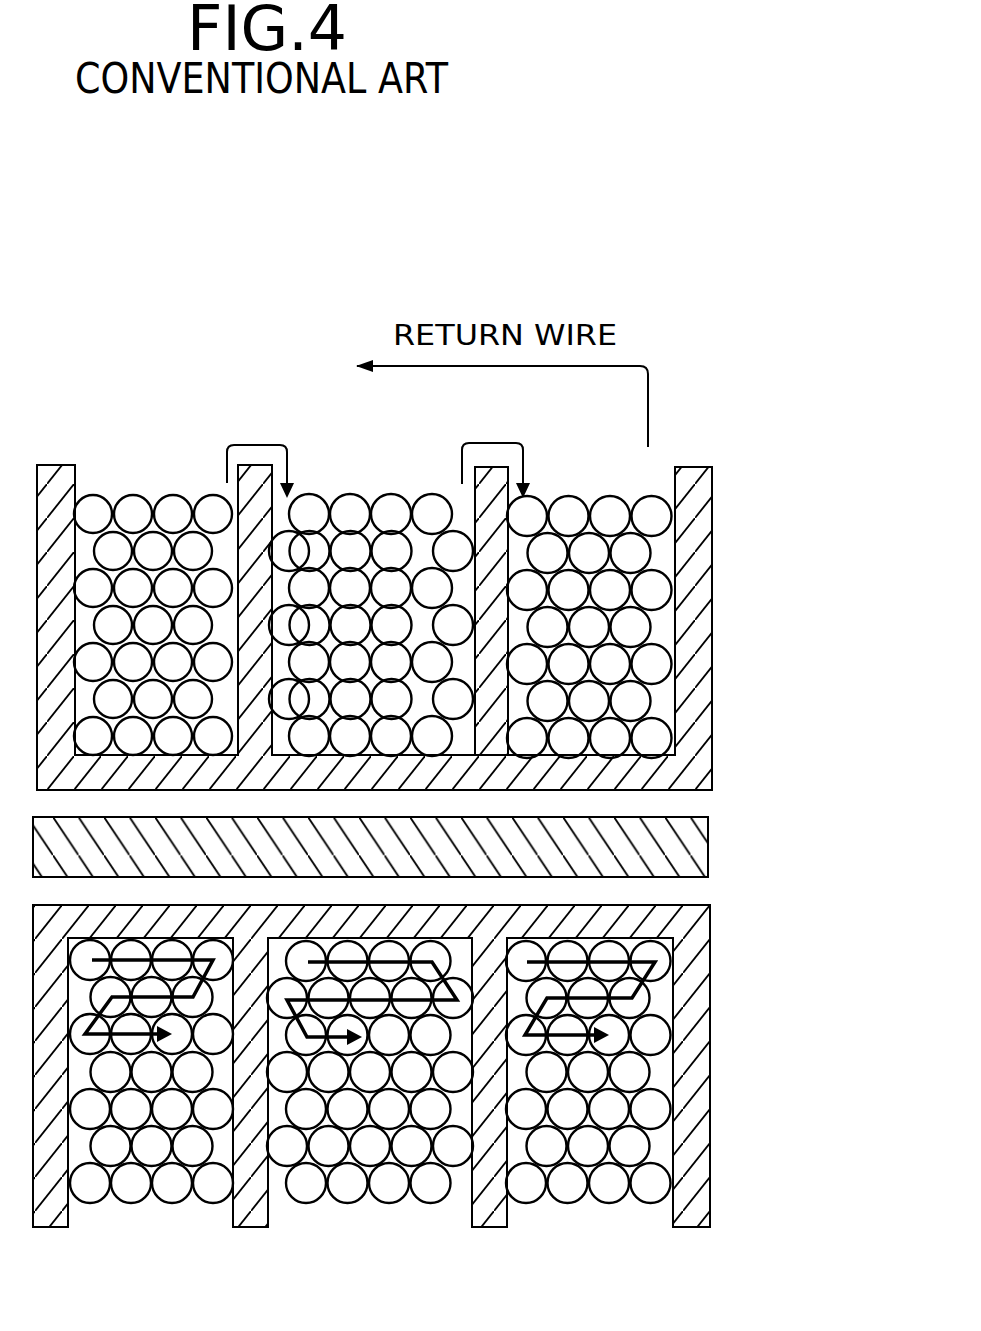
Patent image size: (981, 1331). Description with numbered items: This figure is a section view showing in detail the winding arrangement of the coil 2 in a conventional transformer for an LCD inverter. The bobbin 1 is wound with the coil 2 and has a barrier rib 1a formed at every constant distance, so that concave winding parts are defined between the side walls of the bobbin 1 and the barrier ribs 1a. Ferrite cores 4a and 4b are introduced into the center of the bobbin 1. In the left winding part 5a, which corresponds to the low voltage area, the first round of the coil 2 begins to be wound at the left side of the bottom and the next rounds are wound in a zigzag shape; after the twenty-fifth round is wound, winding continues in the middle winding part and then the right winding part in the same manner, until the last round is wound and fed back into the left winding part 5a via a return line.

The bobbin 1 is at (412, 589).
The barrier rib 1a is at (493, 518).
The coil 2 is at (373, 588).
The left winding part 5a is at (161, 488).
The ferrite core 4a is at (443, 847).
The ferrite core 4b is at (700, 843).